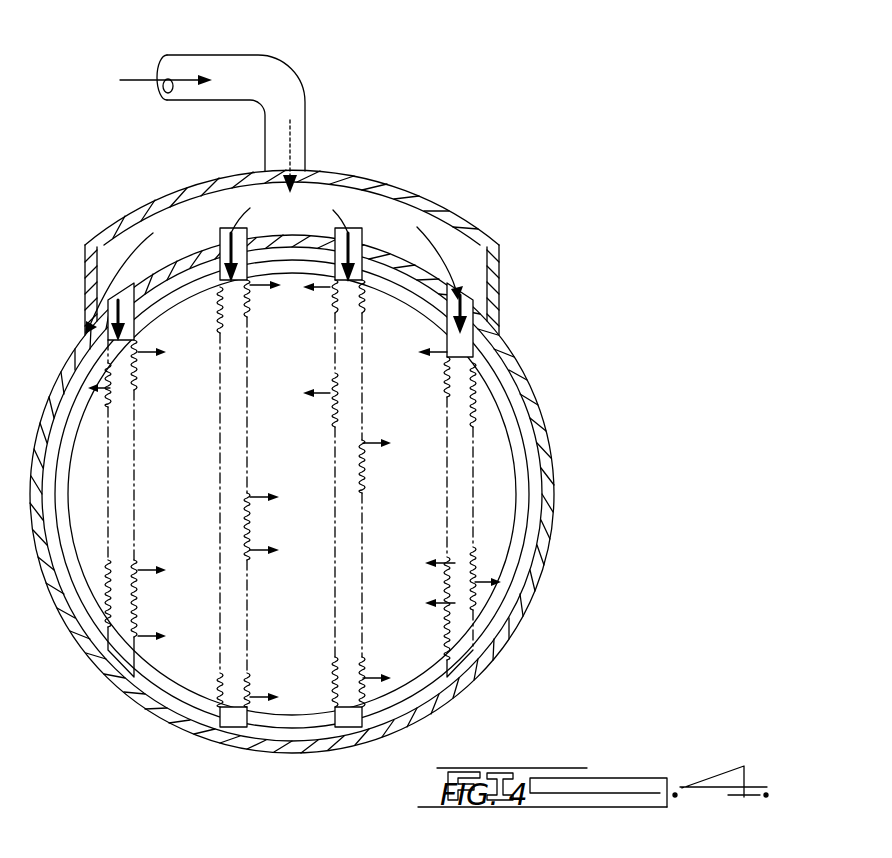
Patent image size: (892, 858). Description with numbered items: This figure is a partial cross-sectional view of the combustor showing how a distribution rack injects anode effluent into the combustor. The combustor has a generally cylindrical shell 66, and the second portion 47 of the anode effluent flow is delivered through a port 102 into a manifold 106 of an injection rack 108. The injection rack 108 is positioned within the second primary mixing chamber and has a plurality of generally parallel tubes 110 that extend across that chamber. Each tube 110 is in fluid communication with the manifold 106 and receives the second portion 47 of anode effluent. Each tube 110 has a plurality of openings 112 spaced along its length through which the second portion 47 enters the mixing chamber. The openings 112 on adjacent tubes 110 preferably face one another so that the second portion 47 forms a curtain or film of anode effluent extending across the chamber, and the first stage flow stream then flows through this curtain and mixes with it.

The second portion of the anode effluent flow 47 is at (127, 80).
The generally cylindrical shell 66 is at (553, 445).
The port 102 is at (307, 172).
The manifold 106 is at (390, 222).
The injection rack 108 is at (530, 153).
The tubes 110 is at (347, 350).
The openings 112 is at (220, 320).